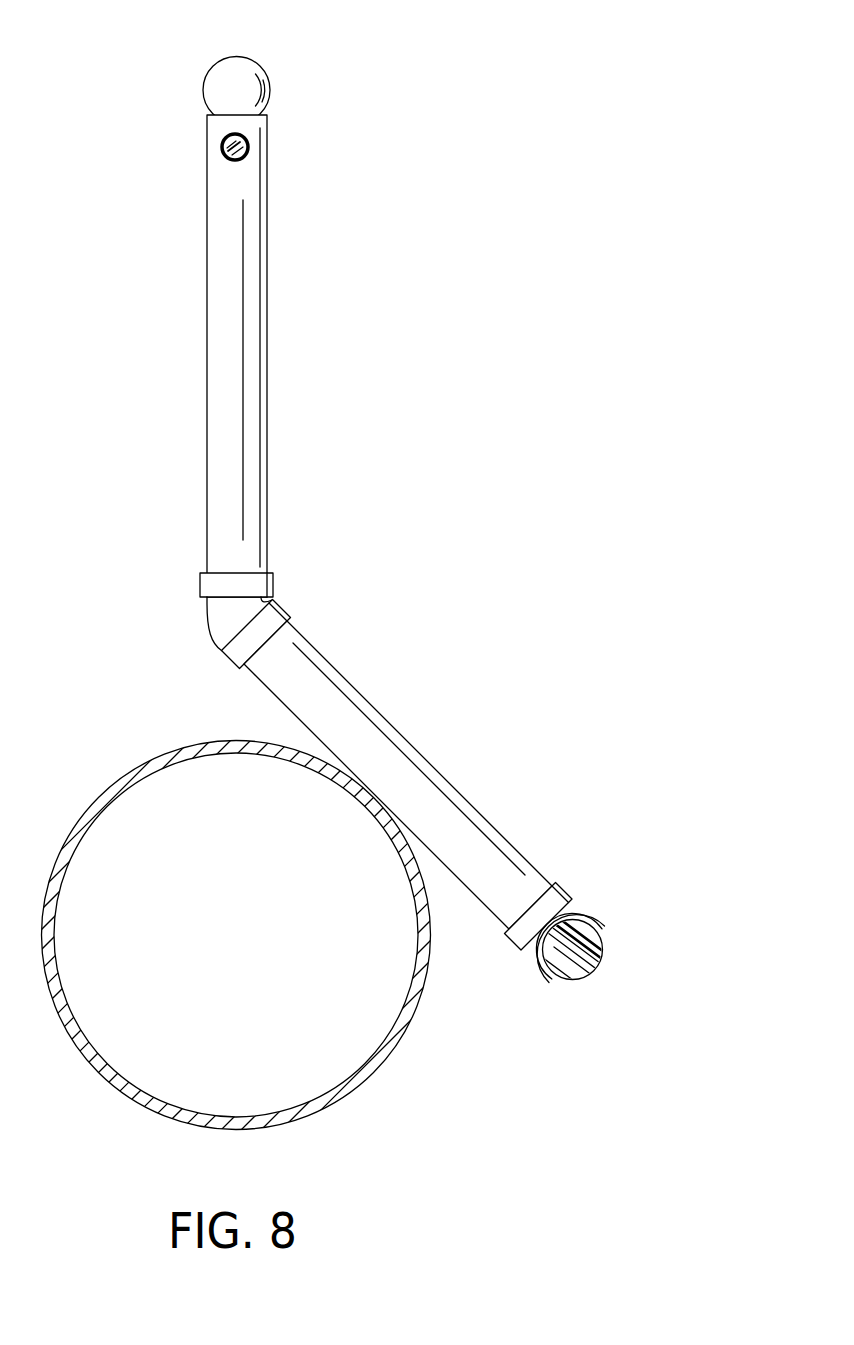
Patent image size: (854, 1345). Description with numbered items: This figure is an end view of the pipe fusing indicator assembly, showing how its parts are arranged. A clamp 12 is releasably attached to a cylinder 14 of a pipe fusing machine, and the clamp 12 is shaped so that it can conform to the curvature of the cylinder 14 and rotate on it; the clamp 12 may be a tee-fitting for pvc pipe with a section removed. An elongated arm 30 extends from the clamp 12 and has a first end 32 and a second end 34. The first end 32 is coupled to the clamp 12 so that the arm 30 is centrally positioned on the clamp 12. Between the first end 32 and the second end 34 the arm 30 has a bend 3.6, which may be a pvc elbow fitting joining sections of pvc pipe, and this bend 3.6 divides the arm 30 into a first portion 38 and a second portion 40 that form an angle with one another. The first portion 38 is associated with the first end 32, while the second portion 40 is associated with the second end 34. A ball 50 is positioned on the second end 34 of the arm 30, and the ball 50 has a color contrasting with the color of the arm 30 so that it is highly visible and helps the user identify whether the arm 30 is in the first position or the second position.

The clamp 12 is at (608, 944).
The cylinder 14 is at (603, 960).
The arm 30 is at (360, 693).
The first end 32 is at (588, 978).
The second end 34 is at (236, 62).
The bend 3.6 is at (210, 627).
The first portion 38 is at (410, 729).
The second portion 40 is at (297, 389).
The ball 50 is at (257, 68).